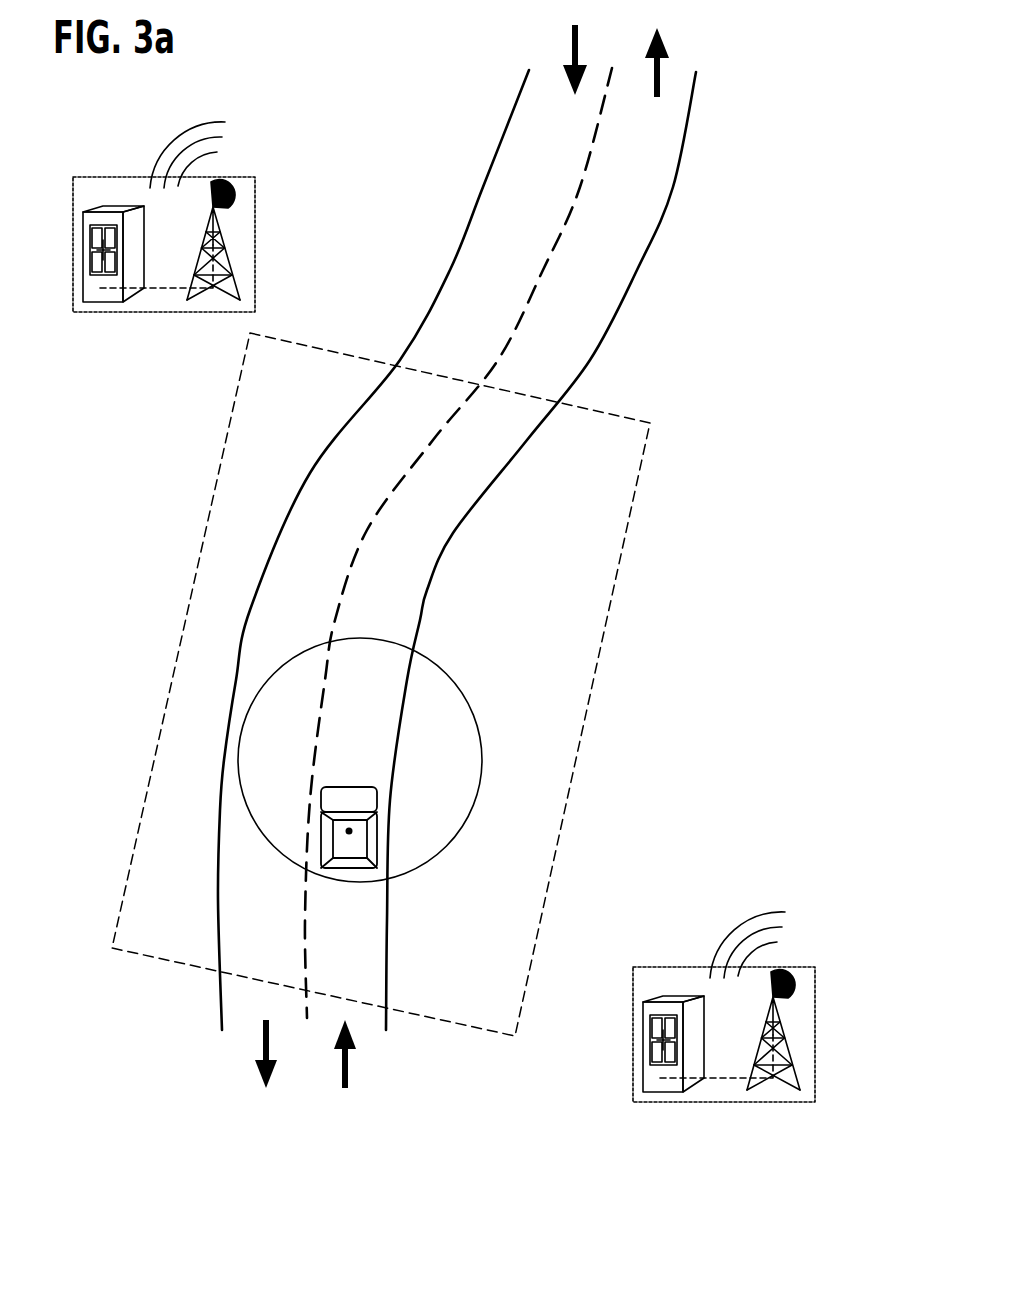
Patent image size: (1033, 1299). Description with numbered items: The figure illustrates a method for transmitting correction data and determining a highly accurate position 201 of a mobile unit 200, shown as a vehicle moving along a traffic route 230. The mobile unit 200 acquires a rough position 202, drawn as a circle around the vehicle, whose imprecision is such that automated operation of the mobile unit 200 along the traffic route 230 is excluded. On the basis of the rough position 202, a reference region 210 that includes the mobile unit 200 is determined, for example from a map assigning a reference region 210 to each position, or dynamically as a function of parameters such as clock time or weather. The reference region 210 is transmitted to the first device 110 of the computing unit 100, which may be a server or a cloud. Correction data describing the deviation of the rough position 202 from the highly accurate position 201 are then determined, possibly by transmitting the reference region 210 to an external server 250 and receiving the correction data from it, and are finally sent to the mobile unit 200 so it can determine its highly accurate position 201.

The computing unit 100 is at (164, 258).
The first device 110 is at (96, 298).
The mobile unit 200 is at (358, 787).
The highly accurate position 201 is at (349, 831).
The rough position 202 is at (437, 858).
The reference region 210 is at (587, 712).
The traffic route 230 is at (673, 200).
The external server 250 is at (724, 1100).